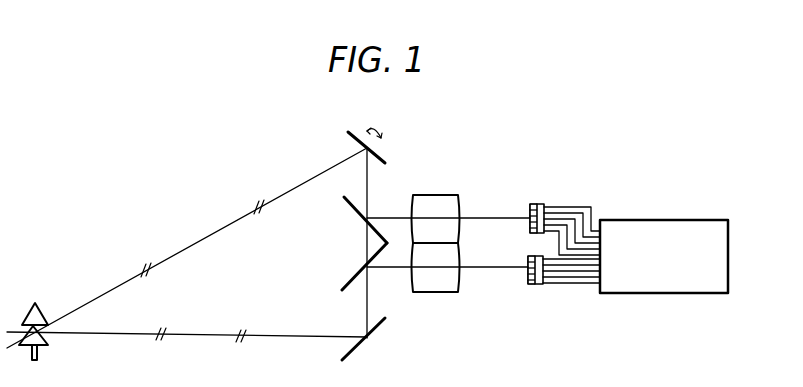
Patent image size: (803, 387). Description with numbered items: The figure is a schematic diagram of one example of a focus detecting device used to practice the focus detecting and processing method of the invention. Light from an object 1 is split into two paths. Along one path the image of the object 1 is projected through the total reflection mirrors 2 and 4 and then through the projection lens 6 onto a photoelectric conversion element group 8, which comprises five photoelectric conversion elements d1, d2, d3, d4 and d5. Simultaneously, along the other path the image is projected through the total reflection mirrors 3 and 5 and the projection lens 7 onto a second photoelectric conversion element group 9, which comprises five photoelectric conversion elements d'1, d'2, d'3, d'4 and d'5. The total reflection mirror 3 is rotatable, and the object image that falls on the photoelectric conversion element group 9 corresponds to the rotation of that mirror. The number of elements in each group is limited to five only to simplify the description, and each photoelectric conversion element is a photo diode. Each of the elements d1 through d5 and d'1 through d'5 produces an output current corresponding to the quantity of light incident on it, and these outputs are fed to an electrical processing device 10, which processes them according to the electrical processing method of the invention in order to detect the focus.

The object 1 is at (36, 316).
The total reflection mirror 2 is at (358, 347).
The total reflection mirror 3 is at (383, 156).
The total reflection mirror 4 is at (353, 270).
The total reflection mirror 5 is at (349, 207).
The projection lens 6 is at (435, 282).
The projection lens 7 is at (421, 202).
The photoelectric conversion element group 8 is at (537, 287).
The photoelectric conversion element group 9 is at (536, 195).
The electrical processing device 10 is at (651, 220).
The photoelectric conversion element d1 is at (538, 284).
The photoelectric conversion element d2 is at (531, 280).
The photoelectric conversion element d3 is at (528, 273).
The photoelectric conversion element d4 is at (528, 267).
The photoelectric conversion element d5 is at (528, 261).
The photoelectric conversion element d'1 is at (518, 238).
The photoelectric conversion element d'2 is at (505, 206).
The photoelectric conversion element d'3 is at (515, 194).
The photoelectric conversion element d'4 is at (536, 176).
The photoelectric conversion element d'5 is at (558, 174).